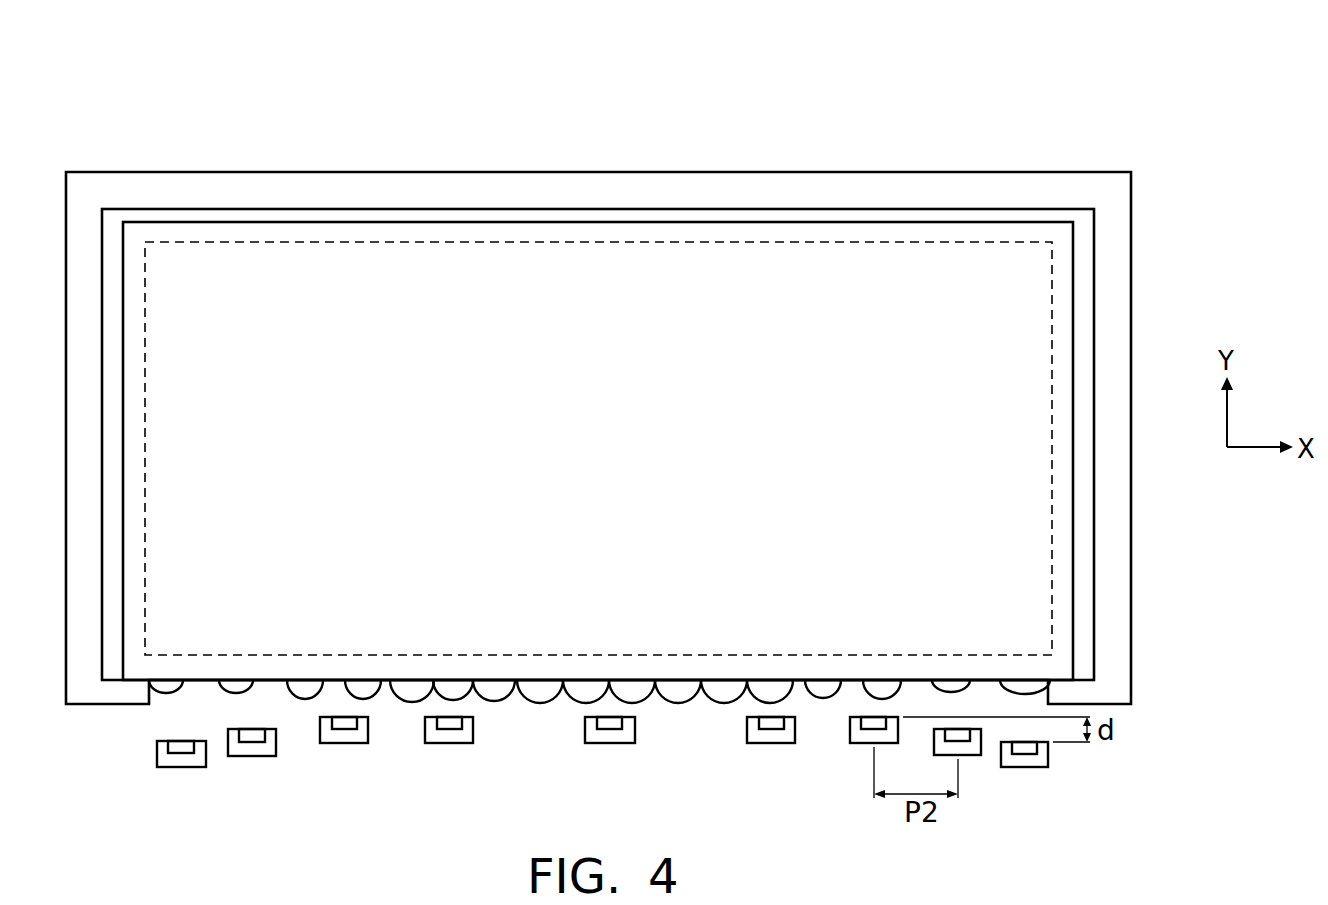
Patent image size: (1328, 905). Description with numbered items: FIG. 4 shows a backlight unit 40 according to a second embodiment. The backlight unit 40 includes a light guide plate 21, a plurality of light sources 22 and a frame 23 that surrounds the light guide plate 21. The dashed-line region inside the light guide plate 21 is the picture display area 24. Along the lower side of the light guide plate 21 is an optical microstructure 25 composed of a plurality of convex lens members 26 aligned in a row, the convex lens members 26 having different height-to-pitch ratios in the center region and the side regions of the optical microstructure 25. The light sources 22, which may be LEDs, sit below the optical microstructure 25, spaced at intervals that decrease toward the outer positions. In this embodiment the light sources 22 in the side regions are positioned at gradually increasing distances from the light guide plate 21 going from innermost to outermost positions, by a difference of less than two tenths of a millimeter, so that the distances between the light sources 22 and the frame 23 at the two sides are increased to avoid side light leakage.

The backlight unit 40 is at (1159, 96).
The frame 23 is at (1118, 265).
The light guide plate 21 is at (1062, 512).
The picture display area 24 is at (1013, 399).
The optical microstructure 25 is at (214, 688).
The convex lens members 26 is at (411, 693).
The light sources 22 is at (1024, 760).